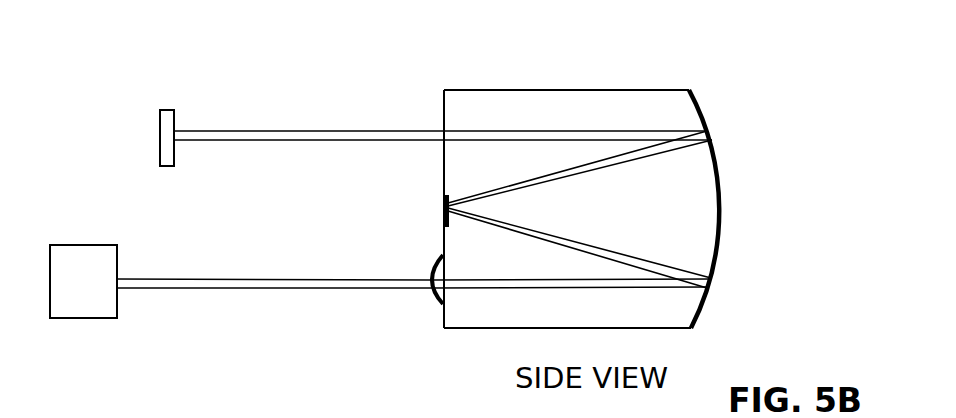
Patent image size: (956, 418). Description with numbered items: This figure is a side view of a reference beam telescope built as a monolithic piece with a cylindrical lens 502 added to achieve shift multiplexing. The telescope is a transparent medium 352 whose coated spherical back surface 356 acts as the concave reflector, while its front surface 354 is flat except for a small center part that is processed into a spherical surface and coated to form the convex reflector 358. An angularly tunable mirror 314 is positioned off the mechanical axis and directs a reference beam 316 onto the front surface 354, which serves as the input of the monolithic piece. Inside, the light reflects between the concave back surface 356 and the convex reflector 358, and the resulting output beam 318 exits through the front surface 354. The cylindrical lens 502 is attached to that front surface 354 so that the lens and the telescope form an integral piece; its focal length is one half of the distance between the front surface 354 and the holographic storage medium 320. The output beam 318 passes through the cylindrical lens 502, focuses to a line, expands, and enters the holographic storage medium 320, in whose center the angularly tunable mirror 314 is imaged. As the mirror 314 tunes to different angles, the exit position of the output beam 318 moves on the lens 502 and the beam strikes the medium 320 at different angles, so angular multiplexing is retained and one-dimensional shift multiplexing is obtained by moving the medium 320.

The angularly tunable mirror 314 is at (158, 122).
The reference beam 316 is at (242, 130).
The output beam 318 is at (160, 289).
The holographic storage medium 320 is at (107, 245).
The transparent medium 352 is at (543, 90).
The front surface 354 is at (444, 99).
The coated spherical back surface 356 is at (721, 203).
The convex reflector 358 is at (444, 209).
The cylindrical lens 502 is at (432, 304).